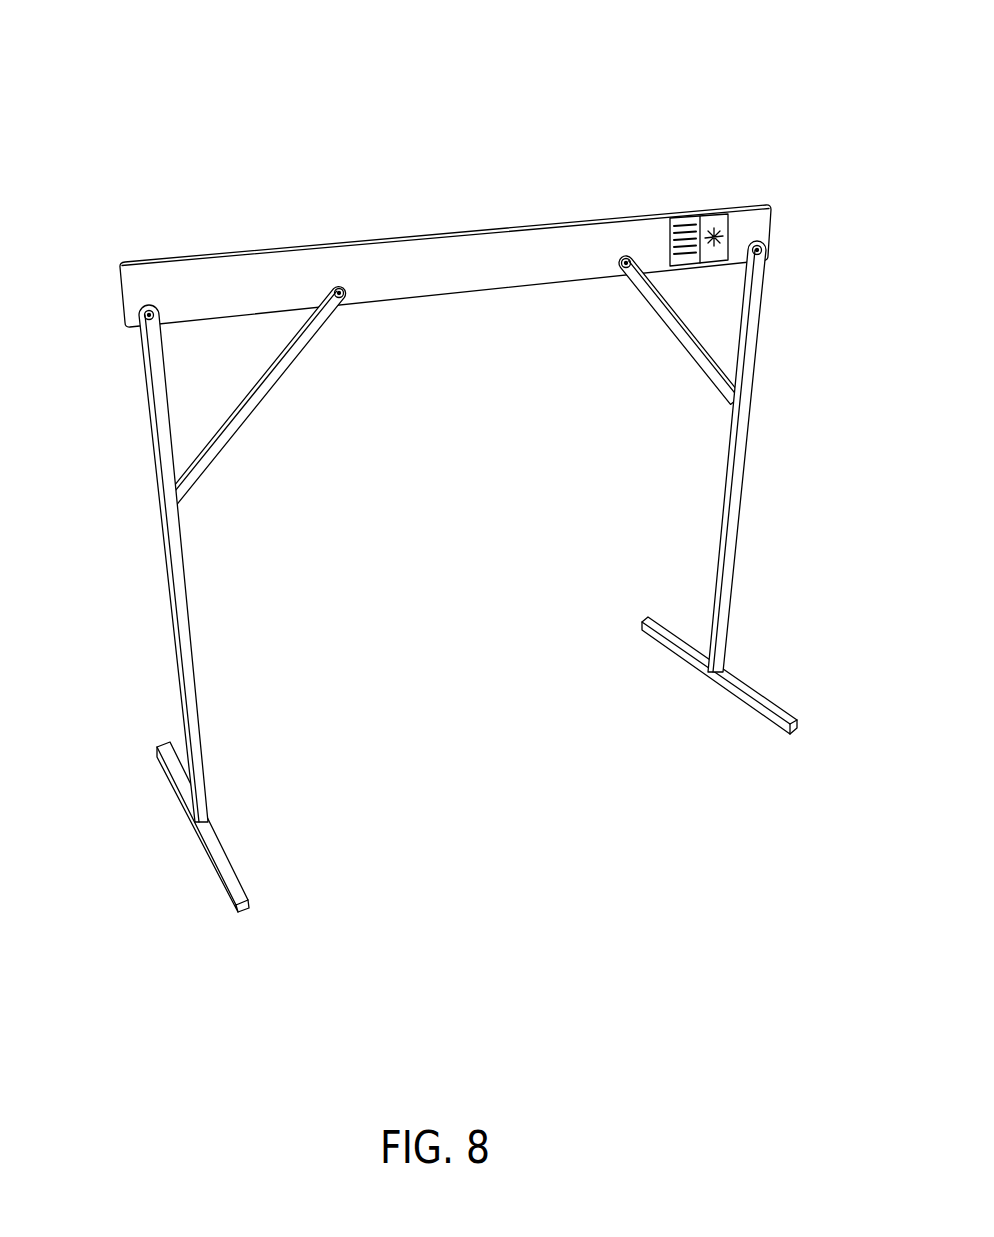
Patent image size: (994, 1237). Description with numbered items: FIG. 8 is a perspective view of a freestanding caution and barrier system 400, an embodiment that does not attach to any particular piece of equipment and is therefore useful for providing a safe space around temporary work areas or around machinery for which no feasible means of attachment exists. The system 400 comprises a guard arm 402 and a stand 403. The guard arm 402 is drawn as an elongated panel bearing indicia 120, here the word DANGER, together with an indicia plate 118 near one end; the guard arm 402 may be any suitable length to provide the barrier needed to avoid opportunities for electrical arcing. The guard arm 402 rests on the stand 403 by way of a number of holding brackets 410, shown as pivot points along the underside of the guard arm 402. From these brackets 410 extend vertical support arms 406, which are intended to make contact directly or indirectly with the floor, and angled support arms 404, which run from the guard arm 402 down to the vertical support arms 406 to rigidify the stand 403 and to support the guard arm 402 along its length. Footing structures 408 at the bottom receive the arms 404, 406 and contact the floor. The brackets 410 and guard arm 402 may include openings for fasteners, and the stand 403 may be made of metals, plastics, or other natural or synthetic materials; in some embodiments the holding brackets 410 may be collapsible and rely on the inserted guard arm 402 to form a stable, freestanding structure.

The freestanding caution and barrier system 400 is at (745, 72).
The guard arm 402 is at (445, 254).
The indicia plate 118 is at (705, 216).
The indicia 120 is at (512, 295).
The stand 403 is at (455, 576).
The angled support arm 404 is at (283, 390).
The vertical support arm 406 is at (168, 598).
The footing structure 408 is at (218, 853).
The holding bracket 410 is at (143, 325).